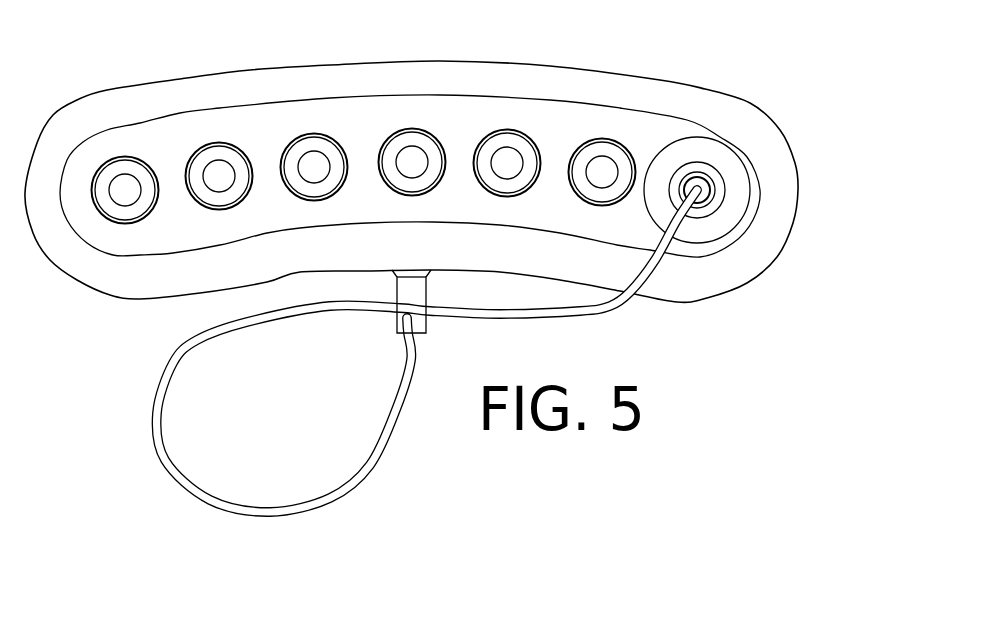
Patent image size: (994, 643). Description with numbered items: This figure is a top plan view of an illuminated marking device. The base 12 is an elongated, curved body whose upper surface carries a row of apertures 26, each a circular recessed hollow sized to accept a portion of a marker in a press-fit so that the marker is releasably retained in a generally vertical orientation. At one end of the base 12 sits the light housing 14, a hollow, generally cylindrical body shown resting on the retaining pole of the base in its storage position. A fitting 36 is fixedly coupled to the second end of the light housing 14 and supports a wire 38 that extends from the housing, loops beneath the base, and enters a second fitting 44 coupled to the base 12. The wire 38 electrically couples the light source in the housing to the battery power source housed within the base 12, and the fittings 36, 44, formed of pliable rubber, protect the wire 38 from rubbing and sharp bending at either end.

The base 12 is at (653, 78).
The light housing 14 is at (723, 237).
The apertures 26 is at (117, 157).
The fitting 36 is at (697, 187).
The wire 38 is at (597, 310).
The fitting 44 is at (412, 295).